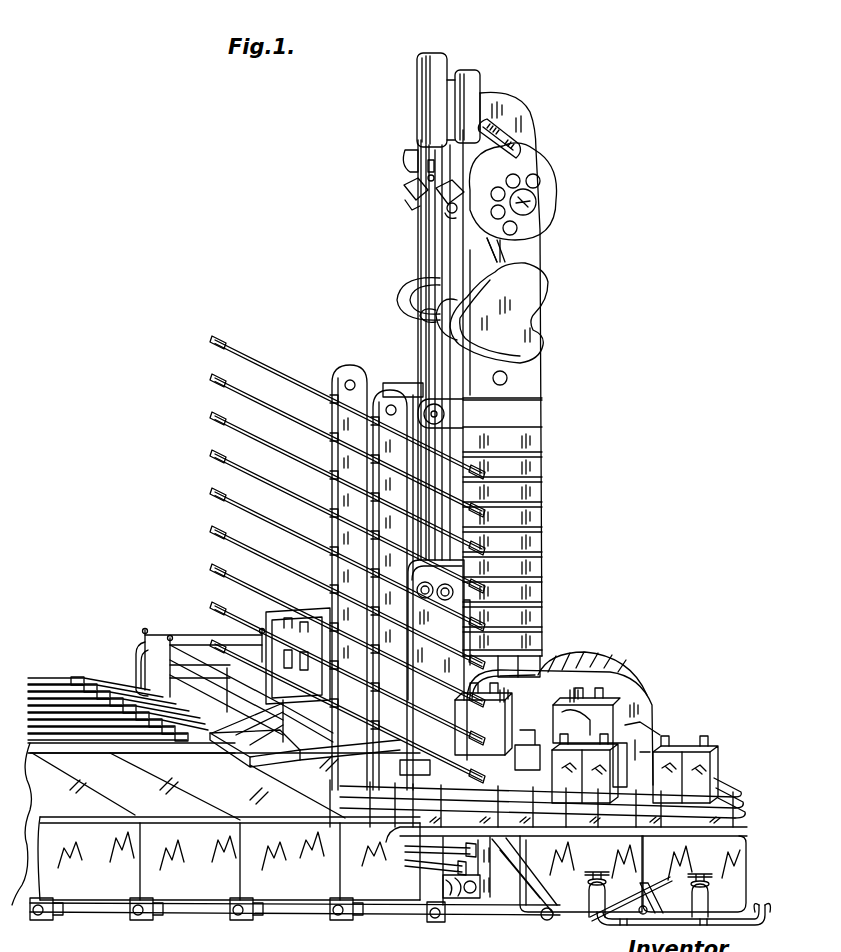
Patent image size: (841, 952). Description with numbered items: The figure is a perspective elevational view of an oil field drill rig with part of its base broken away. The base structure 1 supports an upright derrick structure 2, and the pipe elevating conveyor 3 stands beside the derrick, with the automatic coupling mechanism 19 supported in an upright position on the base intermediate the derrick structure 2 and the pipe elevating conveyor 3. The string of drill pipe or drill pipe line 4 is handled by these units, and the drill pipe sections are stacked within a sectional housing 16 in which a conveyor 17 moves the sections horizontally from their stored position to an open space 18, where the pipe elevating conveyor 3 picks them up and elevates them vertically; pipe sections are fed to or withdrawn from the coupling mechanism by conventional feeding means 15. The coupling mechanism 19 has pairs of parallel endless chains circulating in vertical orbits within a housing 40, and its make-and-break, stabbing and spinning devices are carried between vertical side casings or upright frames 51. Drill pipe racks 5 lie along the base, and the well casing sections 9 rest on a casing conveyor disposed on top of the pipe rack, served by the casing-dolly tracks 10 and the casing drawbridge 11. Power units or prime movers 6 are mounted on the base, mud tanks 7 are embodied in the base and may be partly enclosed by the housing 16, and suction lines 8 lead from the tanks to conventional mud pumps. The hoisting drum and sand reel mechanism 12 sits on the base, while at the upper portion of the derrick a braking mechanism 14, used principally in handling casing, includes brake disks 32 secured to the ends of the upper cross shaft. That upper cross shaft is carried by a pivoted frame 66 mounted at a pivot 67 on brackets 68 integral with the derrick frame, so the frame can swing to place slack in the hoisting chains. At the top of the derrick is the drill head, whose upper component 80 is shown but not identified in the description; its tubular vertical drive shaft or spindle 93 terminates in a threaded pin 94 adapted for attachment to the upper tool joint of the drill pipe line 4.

The base structure 1 is at (395, 919).
The upright derrick structure 2 is at (553, 461).
The pipe elevating conveyor 3 is at (323, 522).
The drill pipe line 4 is at (282, 362).
The drill pipe racks 5 is at (300, 886).
The power units 6 is at (688, 752).
The mud tanks 7 is at (604, 876).
The suction lines 8 is at (757, 910).
The well casing sections 9 is at (55, 692).
The casing-dolly tracks 10 is at (130, 750).
The casing drawbridge 11 is at (262, 762).
The hoisting drum and sand reel mechanism 12 is at (612, 659).
The braking mechanism 14 is at (540, 190).
The pipe feeding means 15 is at (404, 378).
The housing 16 is at (148, 690).
The conveyor 17 is at (462, 890).
The open space 18 is at (480, 900).
The automatic coupling mechanism 19 is at (460, 629).
The brake disks 32 is at (551, 207).
The housing of the coupling mechanism 40 is at (455, 640).
The upright frames 51 is at (404, 752).
The pivoted frame 66 is at (522, 170).
The pivot 67 is at (452, 212).
The brackets 68 is at (440, 203).
The cylinder 80 is at (436, 88).
The vertical drive shaft or spindle 93 is at (418, 153).
The threaded pin 94 is at (428, 168).